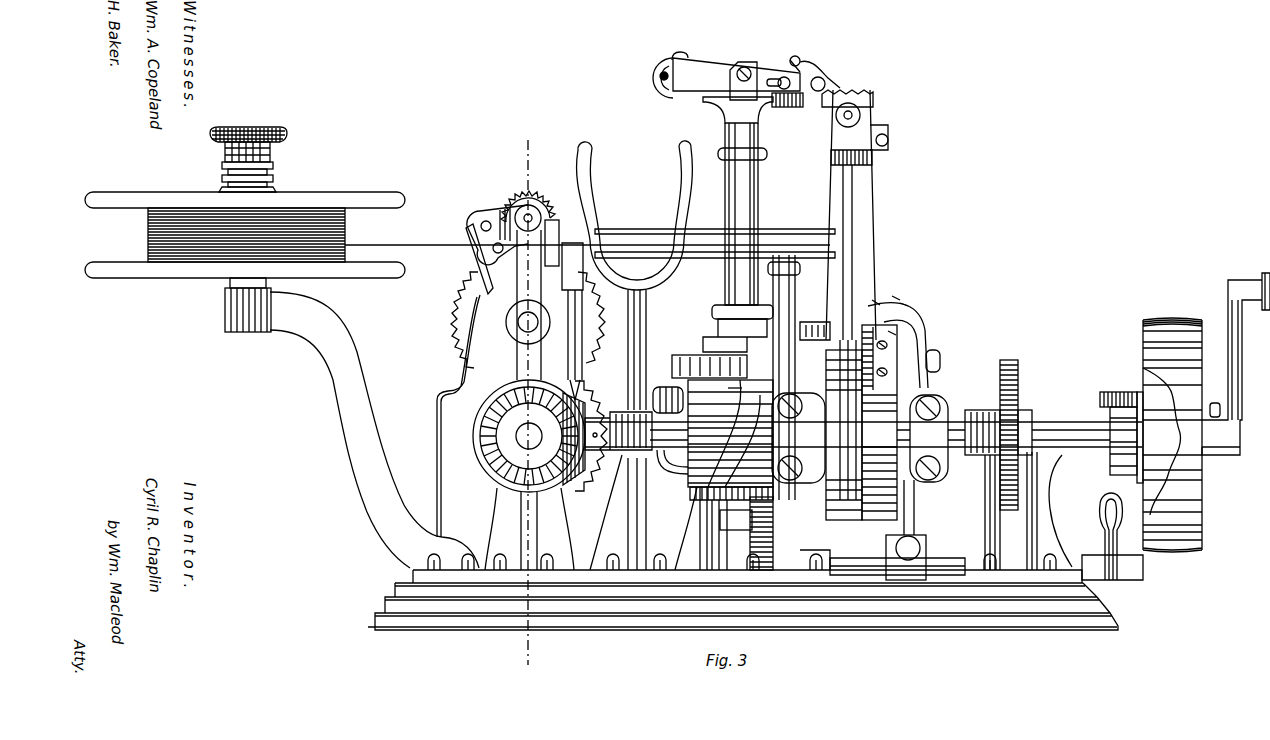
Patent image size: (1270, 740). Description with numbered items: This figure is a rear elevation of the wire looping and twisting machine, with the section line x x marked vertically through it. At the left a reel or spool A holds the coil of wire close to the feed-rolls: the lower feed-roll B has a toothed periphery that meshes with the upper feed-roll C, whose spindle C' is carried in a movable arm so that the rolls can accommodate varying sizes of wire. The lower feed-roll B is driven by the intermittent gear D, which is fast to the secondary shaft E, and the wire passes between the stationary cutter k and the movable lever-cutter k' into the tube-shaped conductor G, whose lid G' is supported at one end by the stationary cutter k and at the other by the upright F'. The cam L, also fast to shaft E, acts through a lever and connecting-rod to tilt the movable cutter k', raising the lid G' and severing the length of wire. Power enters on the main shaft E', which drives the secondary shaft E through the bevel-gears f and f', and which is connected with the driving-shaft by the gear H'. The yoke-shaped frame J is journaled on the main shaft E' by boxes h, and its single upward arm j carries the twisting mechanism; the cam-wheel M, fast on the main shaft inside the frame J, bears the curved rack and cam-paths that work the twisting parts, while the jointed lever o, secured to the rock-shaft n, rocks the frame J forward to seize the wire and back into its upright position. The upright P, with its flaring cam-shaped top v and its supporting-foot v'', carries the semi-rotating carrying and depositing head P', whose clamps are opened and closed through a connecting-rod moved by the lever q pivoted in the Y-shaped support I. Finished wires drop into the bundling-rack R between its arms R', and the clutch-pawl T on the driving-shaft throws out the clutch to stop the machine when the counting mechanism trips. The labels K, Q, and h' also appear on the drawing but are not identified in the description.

The reel or spool A is at (245, 229).
The lower feed-roll B is at (528, 320).
The upper feed-roll C is at (526, 197).
The spindle C' is at (544, 209).
The intermittent gear D is at (590, 411).
The secondary shaft E is at (511, 432).
The main shaft E' is at (829, 422).
The upright F' is at (793, 377).
The bevel-gear f' is at (514, 436).
The bevel-gear f is at (591, 436).
The conductor G is at (715, 267).
The lid G' is at (715, 225).
The gear H' is at (1025, 435).
The Y-shaped support I is at (672, 467).
The head or frame J is at (898, 345).
The arm j is at (878, 220).
The cam K is at (844, 435).
The stationary cutter k is at (583, 345).
The movable lever-cutter k' is at (564, 255).
The cam L is at (730, 475).
The cam-wheel M is at (879, 422).
The upright P is at (738, 237).
The carrying and depositing head P' is at (746, 67).
The drum Q is at (1196, 346).
The bundling-rack R is at (637, 420).
The arms R' is at (635, 215).
The clutch-pawl T is at (1112, 398).
The boxes h is at (860, 332).
The hub h' is at (885, 285).
The rock-shaft n is at (897, 565).
The jointed lever o is at (912, 506).
The lever q is at (664, 395).
The flaring top v is at (738, 110).
The supporting-foot v'' is at (734, 433).
The section line x is at (523, 401).